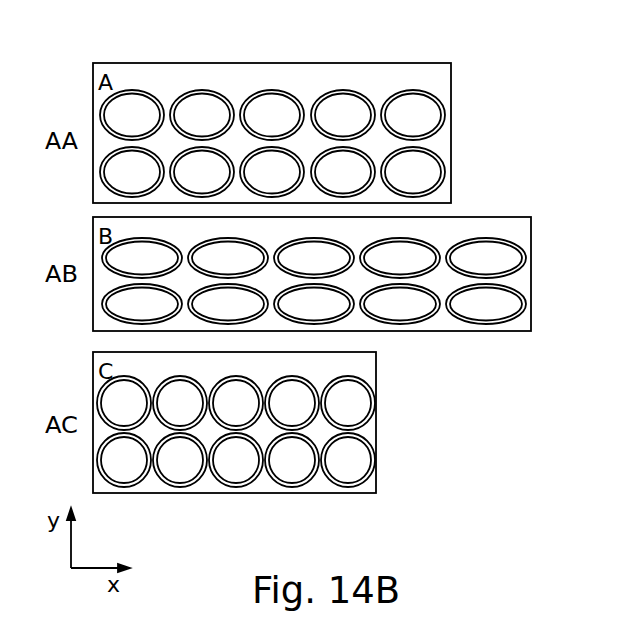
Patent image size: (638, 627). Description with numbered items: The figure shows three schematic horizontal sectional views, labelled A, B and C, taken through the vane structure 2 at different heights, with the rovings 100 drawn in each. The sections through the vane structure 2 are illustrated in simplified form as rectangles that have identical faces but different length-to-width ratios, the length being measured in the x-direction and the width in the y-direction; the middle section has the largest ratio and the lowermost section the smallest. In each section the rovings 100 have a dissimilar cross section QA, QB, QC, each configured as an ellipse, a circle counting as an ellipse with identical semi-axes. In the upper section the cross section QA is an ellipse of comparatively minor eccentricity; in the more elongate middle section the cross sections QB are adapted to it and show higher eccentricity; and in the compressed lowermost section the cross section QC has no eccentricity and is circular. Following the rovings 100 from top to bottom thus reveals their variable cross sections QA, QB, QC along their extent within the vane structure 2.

The rovings 100 is at (138, 116).
The vane structure 2 is at (305, 79).
The cross section of the rovings in section A QA is at (428, 121).
The cross section of the rovings in section B QB is at (500, 260).
The cross section of the rovings in section C QC is at (347, 408).